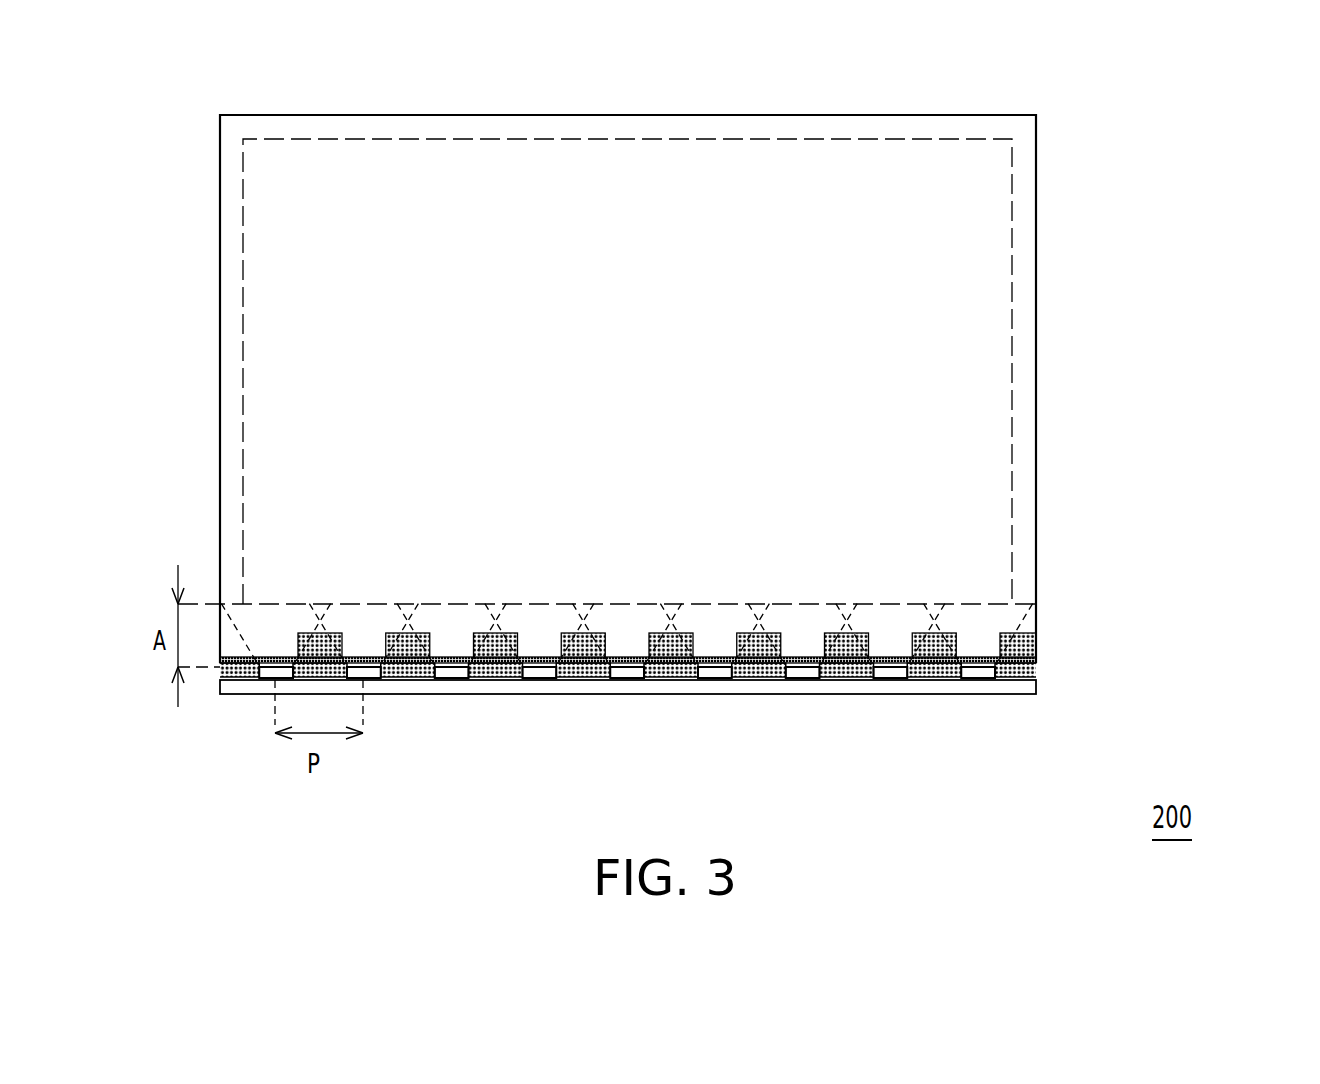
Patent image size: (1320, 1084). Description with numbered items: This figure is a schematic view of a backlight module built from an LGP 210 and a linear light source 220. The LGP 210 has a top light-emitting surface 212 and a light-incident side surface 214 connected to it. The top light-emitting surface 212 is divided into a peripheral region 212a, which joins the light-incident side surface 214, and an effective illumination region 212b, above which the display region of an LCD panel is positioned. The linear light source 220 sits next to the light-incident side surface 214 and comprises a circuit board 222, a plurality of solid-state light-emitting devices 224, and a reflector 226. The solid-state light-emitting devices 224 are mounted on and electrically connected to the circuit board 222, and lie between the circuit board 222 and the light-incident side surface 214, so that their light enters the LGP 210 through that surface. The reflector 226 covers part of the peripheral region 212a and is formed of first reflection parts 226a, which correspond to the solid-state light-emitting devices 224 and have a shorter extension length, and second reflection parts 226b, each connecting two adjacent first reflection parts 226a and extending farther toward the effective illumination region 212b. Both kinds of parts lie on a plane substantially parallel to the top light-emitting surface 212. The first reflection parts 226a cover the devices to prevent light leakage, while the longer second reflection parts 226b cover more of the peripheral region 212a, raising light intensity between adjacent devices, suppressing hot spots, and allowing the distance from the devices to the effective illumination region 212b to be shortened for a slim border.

The LGP 210 is at (1037, 157).
The top light-emitting surface 212 is at (752, 371).
The peripheral region 212a is at (1025, 292).
The effective illumination region 212b is at (947, 399).
The light-incident side surface 214 is at (1015, 664).
The linear light source 220 is at (628, 751).
The circuit board 222 is at (862, 778).
The solid-state light-emitting devices 224 is at (890, 680).
The reflector 226 is at (632, 569).
The first reflection parts 226a is at (538, 659).
The second reflection parts 226b is at (481, 633).